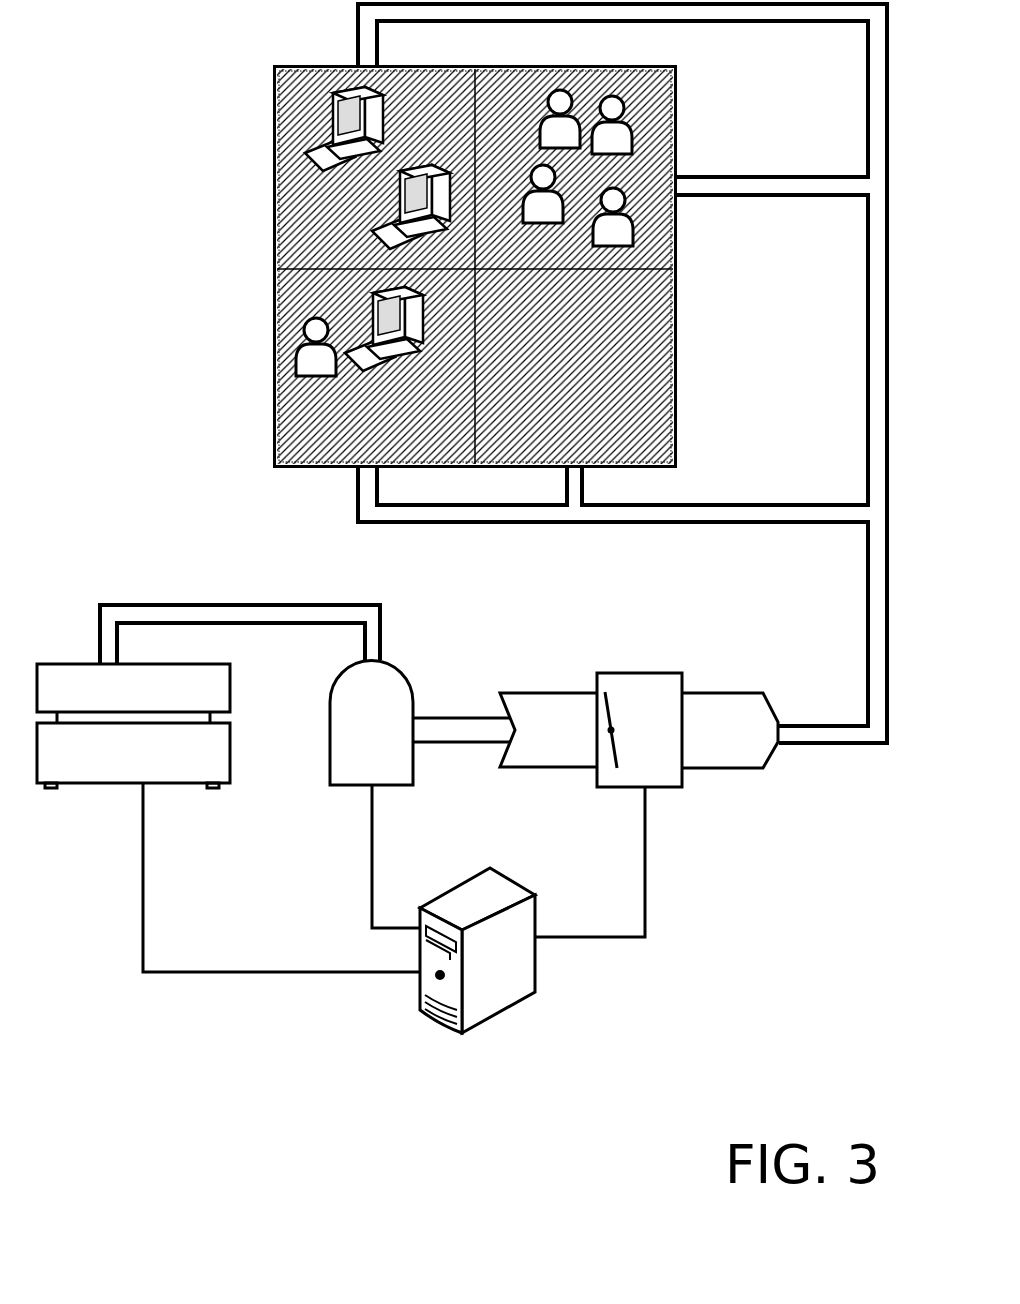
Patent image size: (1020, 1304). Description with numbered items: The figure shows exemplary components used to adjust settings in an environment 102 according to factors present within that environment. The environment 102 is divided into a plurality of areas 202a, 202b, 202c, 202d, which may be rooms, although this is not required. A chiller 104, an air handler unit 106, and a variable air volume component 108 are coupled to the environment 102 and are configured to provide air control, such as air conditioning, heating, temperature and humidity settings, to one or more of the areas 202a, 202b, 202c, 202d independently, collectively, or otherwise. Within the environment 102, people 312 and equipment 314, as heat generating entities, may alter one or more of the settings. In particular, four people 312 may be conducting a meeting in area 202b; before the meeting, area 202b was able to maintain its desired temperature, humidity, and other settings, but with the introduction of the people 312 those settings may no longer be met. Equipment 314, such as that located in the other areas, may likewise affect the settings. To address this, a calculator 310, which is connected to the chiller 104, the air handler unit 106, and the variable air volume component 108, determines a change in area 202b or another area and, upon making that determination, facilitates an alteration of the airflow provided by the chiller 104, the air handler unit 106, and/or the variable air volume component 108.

The environment 102 is at (200, 49).
The chiller 104 is at (175, 785).
The air handler unit 106 is at (405, 673).
The variable air volume component 108 is at (733, 692).
The area 202a is at (320, 169).
The area 202b is at (614, 157).
The area 202c is at (372, 444).
The area 202d is at (555, 444).
The calculator 310 is at (535, 895).
The people 312 is at (657, 90).
The equipment 314 is at (284, 182).